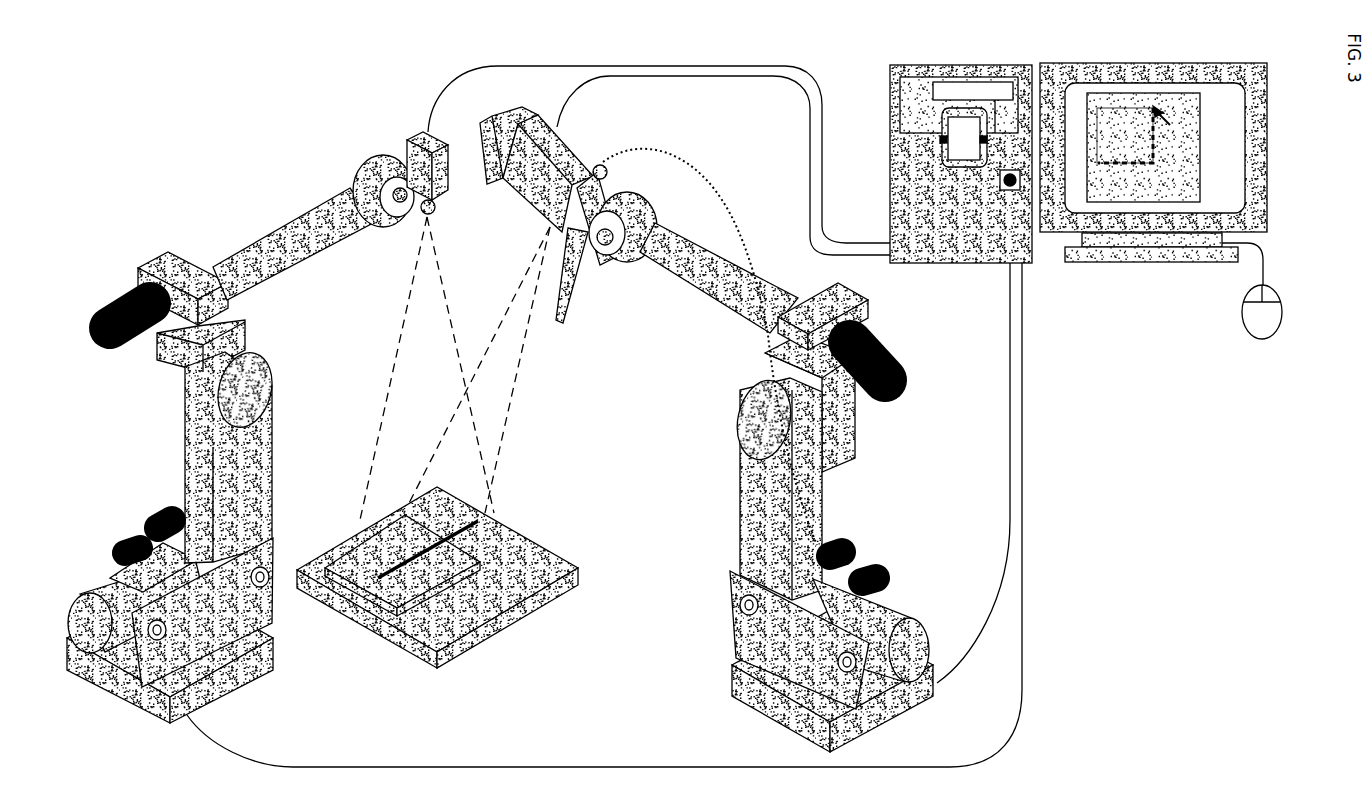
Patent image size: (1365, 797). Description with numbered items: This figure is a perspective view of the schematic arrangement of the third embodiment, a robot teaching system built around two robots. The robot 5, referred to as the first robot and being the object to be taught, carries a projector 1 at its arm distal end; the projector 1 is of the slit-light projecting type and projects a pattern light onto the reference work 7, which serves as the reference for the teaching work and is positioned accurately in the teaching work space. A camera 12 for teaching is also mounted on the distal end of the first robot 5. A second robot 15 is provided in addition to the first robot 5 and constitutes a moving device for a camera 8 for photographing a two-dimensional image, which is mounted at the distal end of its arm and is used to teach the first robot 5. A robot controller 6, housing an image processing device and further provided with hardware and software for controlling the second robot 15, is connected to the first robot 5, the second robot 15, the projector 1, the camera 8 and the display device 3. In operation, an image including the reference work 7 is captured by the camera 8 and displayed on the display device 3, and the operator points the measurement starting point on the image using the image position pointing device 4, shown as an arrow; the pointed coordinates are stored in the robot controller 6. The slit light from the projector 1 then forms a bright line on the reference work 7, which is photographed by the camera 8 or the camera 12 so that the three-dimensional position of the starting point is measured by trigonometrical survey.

The projector 1 is at (557, 148).
The display device 3 is at (1252, 77).
The image position pointing device 4 is at (1272, 292).
The robot 5 is at (900, 612).
The robot controller 6 is at (1027, 67).
The reference work 7 is at (528, 548).
The camera 8 is at (428, 135).
The camera 12 is at (505, 113).
The second robot 15 is at (123, 543).